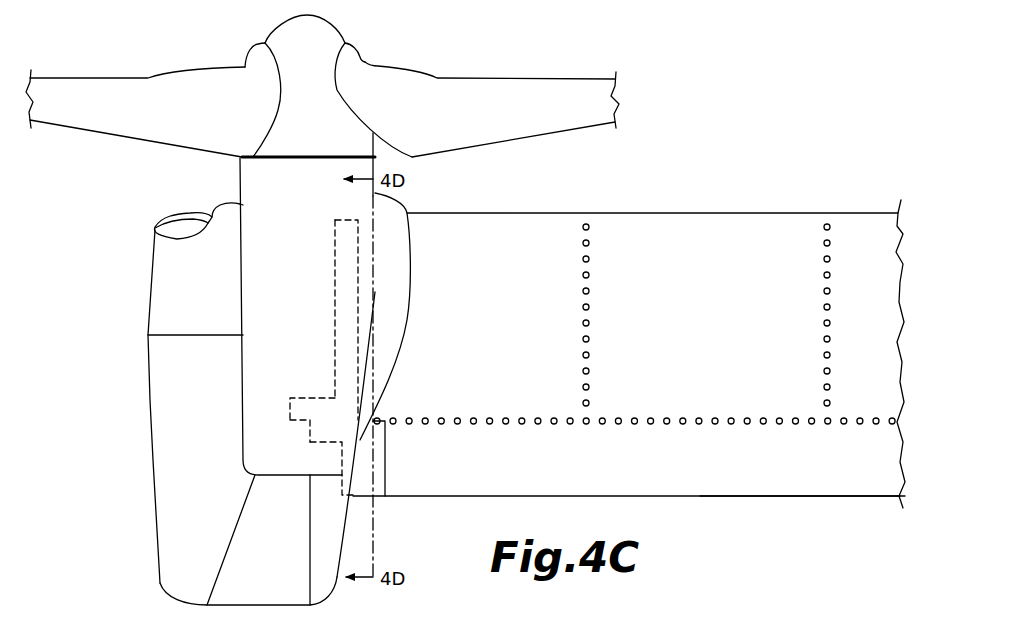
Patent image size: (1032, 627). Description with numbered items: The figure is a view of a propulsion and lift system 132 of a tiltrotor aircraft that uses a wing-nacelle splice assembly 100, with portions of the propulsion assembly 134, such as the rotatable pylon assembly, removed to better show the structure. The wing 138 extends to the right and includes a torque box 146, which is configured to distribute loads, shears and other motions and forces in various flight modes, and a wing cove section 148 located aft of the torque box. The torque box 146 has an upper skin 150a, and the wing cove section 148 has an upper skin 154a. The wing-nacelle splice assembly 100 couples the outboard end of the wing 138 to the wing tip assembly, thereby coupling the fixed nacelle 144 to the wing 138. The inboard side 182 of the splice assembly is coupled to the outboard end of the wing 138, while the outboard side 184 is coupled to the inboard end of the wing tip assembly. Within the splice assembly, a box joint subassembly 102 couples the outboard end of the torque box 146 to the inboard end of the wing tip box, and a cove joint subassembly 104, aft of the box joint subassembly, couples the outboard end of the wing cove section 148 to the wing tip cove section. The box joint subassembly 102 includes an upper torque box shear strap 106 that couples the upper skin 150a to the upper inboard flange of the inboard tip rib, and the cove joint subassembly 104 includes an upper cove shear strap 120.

The wing-nacelle splice assembly 100 is at (331, 265).
The box joint subassembly 102 is at (331, 302).
The cove joint subassembly 104 is at (390, 477).
The upper torque box shear strap 106 is at (335, 337).
The upper cove shear strap 120 is at (385, 441).
The propulsion and lift system 132 is at (679, 84).
The propulsion assembly 134 is at (150, 518).
The wing 138 is at (867, 223).
The fixed nacelle 144 is at (160, 583).
The torque box 146 is at (778, 218).
The wing cove section 148 is at (791, 483).
The upper skin 150a is at (660, 216).
The upper skin 154a is at (698, 483).
The inboard side 182 is at (360, 302).
The outboard side 184 is at (335, 372).